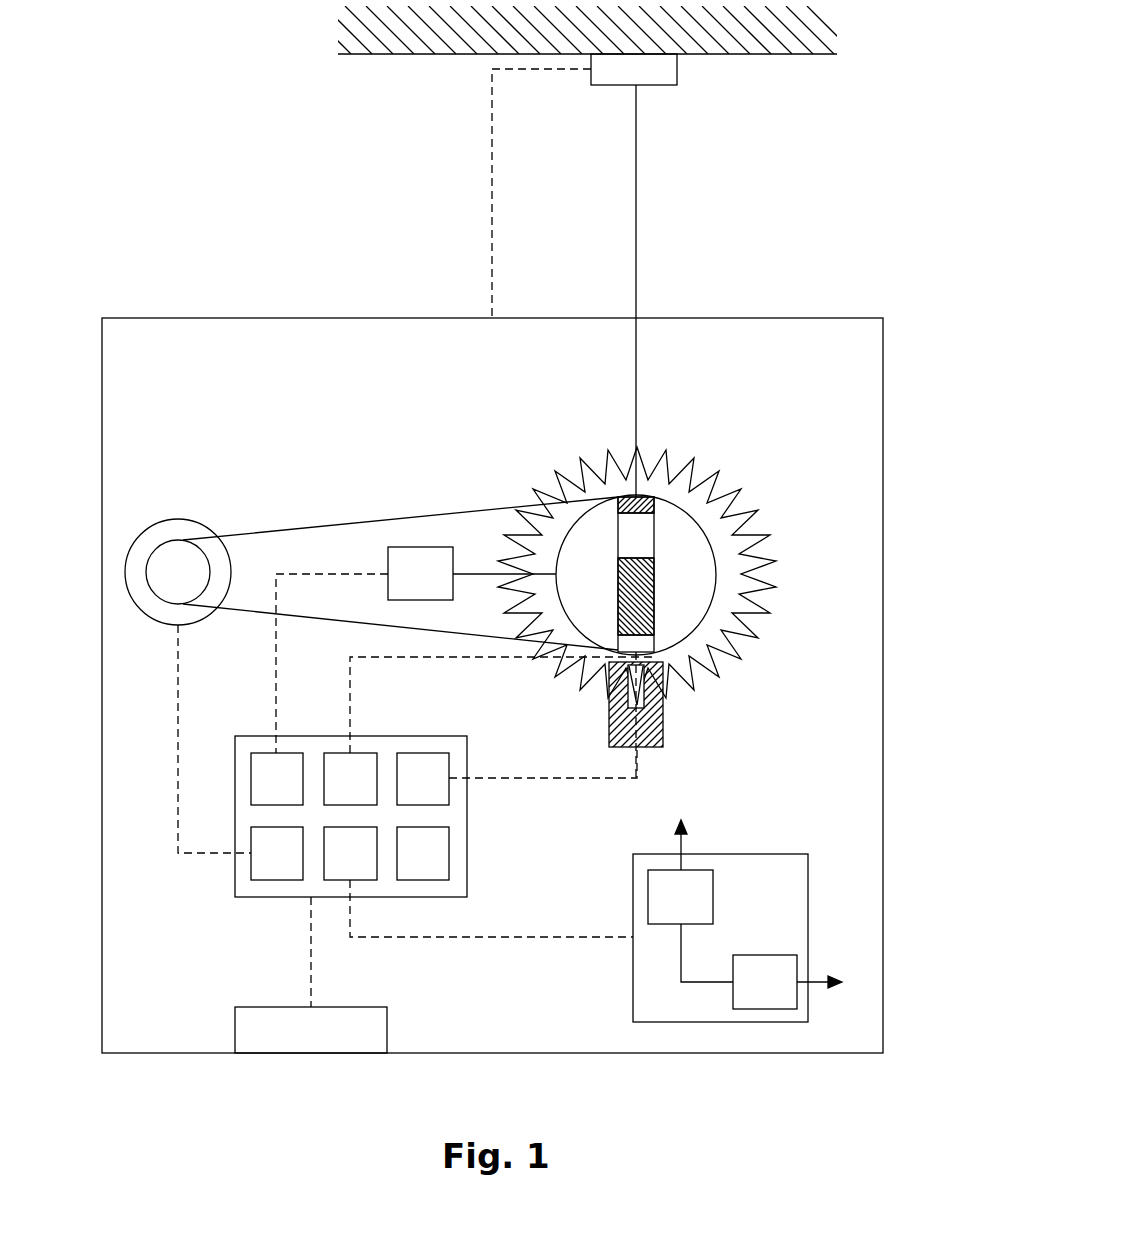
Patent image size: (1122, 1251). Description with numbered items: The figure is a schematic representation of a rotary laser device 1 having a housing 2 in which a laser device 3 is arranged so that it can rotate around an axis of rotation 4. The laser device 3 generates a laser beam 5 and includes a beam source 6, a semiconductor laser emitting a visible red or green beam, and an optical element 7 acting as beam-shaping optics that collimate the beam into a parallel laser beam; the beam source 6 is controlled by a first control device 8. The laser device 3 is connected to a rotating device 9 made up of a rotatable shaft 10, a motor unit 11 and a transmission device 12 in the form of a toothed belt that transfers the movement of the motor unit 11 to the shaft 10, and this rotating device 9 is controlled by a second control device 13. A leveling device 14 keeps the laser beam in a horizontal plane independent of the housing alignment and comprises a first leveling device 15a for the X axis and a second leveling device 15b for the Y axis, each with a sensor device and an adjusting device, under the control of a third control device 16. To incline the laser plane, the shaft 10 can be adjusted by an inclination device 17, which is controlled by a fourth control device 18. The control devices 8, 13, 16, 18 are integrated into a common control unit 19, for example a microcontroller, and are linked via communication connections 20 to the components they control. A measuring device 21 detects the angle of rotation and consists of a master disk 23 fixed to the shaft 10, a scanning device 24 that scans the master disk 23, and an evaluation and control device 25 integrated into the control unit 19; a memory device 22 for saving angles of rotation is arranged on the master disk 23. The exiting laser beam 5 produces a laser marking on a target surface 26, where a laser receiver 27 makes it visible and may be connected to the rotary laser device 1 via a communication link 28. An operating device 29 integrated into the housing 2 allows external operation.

The rotary laser device 1 is at (230, 255).
The housing 2 is at (374, 318).
The laser device 3 is at (608, 538).
The axis of rotation 4 is at (640, 576).
The laser beam 5 is at (640, 370).
The beam source 6 is at (636, 605).
The optical element 7 is at (653, 495).
The first control device 8 is at (342, 793).
The rotating device 9 is at (283, 482).
The rotatable shaft 10 is at (706, 533).
The motor unit 11 is at (178, 519).
The transmission device 12 is at (397, 513).
The second control device 13 is at (263, 867).
The leveling device 14 is at (693, 921).
The first leveling device 15a is at (661, 910).
The second leveling device 15b is at (745, 995).
The third control device 16 is at (336, 867).
The inclination device 17 is at (406, 587).
The fourth control device 18 is at (263, 793).
The control unit 19 is at (351, 853).
The communication connections 20 is at (278, 640).
The measuring device 21 is at (758, 676).
The memory device 22 is at (409, 867).
The master disk 23 is at (750, 590).
The scanning device 24 is at (664, 722).
The evaluation and control device 25 is at (409, 793).
The target surface 26 is at (399, 56).
The laser receiver 27 is at (662, 70).
The communication link 28 is at (494, 202).
The operating device 29 is at (297, 1044).